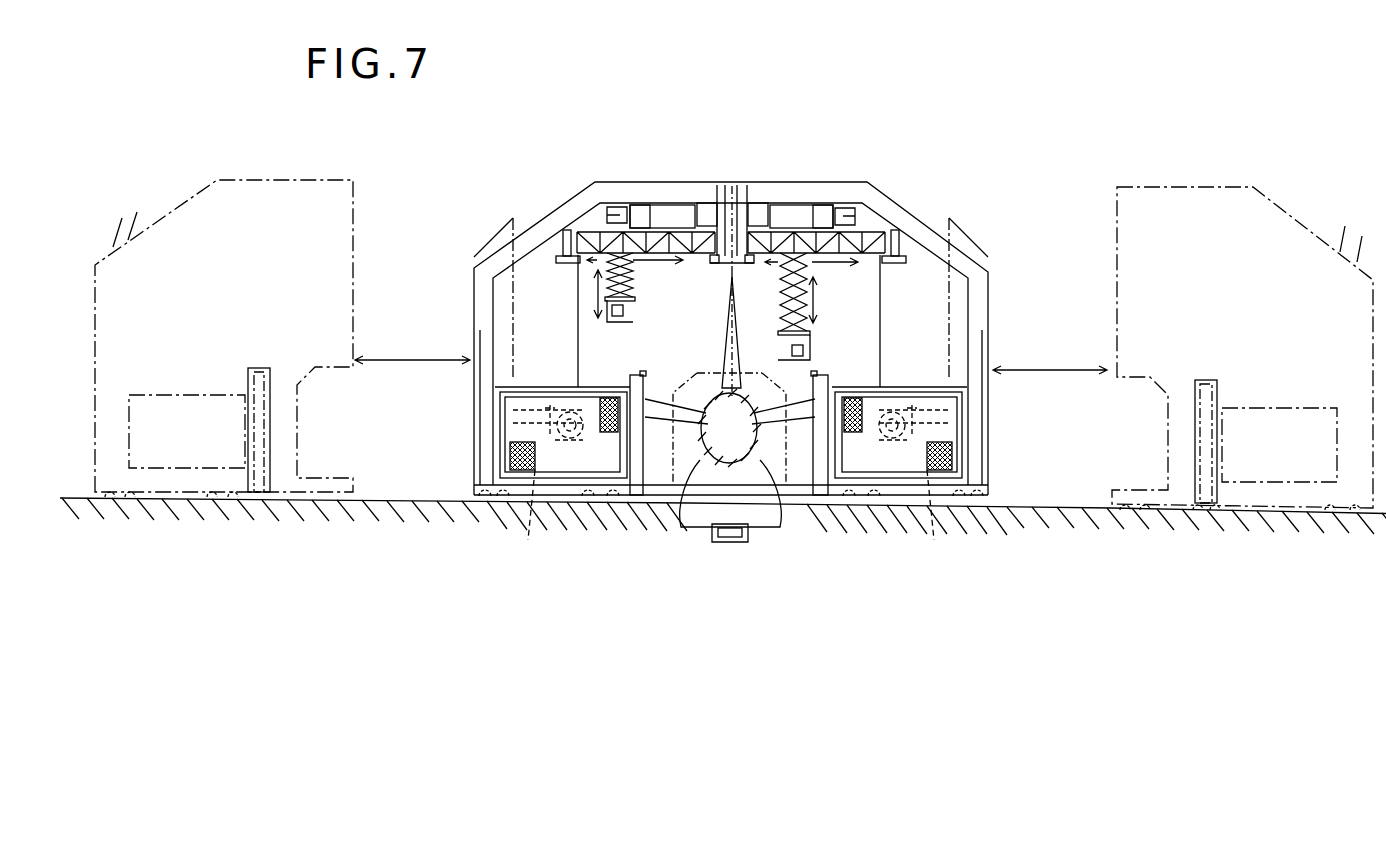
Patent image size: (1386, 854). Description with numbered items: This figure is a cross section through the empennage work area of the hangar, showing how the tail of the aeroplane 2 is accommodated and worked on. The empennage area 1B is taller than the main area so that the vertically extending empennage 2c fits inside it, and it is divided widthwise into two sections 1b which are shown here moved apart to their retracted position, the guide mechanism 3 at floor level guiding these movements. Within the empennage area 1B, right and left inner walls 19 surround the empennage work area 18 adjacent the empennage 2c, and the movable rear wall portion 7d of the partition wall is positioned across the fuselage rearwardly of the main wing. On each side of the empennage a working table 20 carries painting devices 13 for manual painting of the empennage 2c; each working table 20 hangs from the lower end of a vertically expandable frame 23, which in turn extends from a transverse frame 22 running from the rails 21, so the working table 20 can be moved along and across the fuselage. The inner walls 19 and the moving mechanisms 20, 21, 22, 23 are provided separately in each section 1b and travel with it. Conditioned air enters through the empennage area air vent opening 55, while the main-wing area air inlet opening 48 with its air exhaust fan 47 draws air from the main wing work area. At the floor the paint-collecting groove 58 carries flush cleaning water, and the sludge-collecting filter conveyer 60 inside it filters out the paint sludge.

The empennage area 1B is at (878, 193).
The section 1b is at (185, 203).
The aeroplane 2 is at (766, 472).
The empennage 2c is at (680, 497).
The guide mechanism 3 is at (403, 493).
The rear wall portion 7d is at (248, 374).
The painting device 13 is at (607, 324).
The empennage work area 18 is at (721, 378).
The inner wall 19 is at (578, 364).
The working table 20 is at (618, 325).
The rail 21 is at (563, 262).
The transverse frame 22 is at (648, 228).
The vertically expandable frame 23 is at (597, 247).
The air exhaust fan 47 is at (729, 527).
The main-wing area air inlet opening 48 is at (507, 440).
The empennage area air vent opening 55 is at (750, 203).
The paint-collecting groove 58 is at (746, 538).
The sludge-collecting filter conveyer 60 is at (716, 540).